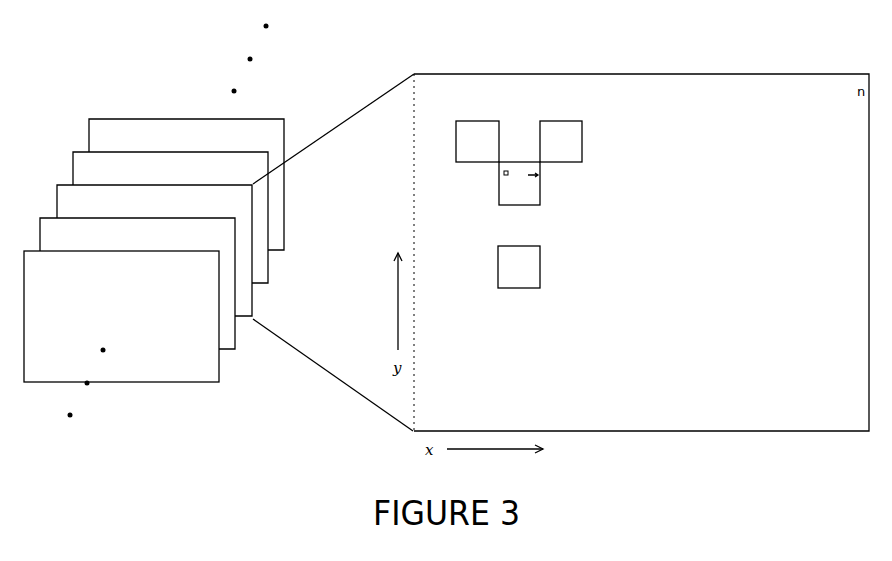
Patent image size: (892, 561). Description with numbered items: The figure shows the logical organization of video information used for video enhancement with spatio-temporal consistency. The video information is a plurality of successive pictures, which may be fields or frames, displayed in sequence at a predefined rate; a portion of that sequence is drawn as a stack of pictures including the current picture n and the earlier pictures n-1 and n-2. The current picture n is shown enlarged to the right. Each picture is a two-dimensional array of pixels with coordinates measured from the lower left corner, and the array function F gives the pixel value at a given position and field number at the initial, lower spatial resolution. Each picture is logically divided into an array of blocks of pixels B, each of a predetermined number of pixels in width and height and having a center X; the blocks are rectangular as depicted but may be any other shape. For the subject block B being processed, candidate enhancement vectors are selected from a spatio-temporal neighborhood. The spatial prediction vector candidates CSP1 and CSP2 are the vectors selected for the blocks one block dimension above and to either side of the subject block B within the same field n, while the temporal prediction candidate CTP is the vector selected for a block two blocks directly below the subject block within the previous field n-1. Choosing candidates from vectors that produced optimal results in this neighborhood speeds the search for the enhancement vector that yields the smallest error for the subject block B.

The picture n is at (154, 250).
The picture n-1 is at (137, 283).
The picture n-2 is at (121, 316).
The spatial prediction vector candidate CSP1 is at (462, 84).
The spatial prediction vector candidate CSP2 is at (557, 84).
The temporal prediction candidate CTP is at (507, 300).
The block of pixels B is at (541, 218).
The array function F is at (504, 174).
The block center X is at (527, 184).